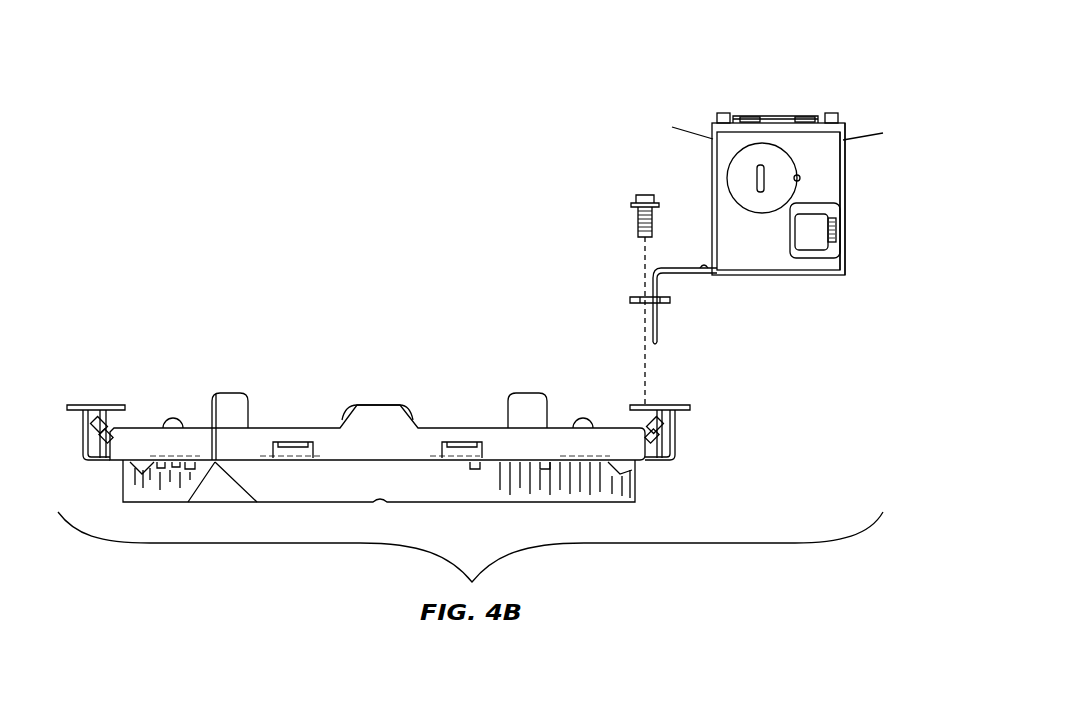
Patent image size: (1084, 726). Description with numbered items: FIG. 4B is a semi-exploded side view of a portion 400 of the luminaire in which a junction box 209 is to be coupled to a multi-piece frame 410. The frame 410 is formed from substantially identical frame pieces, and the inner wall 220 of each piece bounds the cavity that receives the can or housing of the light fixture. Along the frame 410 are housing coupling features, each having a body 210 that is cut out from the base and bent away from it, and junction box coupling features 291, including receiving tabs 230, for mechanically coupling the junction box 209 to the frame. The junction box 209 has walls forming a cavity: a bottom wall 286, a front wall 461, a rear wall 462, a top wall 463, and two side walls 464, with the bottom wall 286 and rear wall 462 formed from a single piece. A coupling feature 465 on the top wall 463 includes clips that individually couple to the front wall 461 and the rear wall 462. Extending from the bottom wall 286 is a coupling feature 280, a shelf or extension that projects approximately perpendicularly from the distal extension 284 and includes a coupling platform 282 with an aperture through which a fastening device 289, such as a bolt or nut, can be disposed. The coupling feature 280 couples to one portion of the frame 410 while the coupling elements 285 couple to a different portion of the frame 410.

The portion of the luminaire 400 is at (306, 106).
The frame 410 is at (130, 390).
The inner wall 220 is at (395, 483).
The receiving tab 230 is at (462, 458).
The junction box coupling feature 291 is at (373, 396).
The body of the coupling feature 210 is at (230, 404).
The coupling feature 280 is at (678, 288).
The coupling platform 282 is at (628, 300).
The distal extension 284 is at (650, 289).
The coupling element 285 is at (657, 343).
The bottom wall 286 is at (667, 268).
The fastening device 289 is at (640, 196).
The junction box 209 is at (868, 198).
The front wall 461 is at (715, 168).
The rear wall 462 is at (847, 175).
The top wall 463 is at (778, 117).
The side wall 464 is at (782, 256).
The coupling feature 465 is at (857, 138).